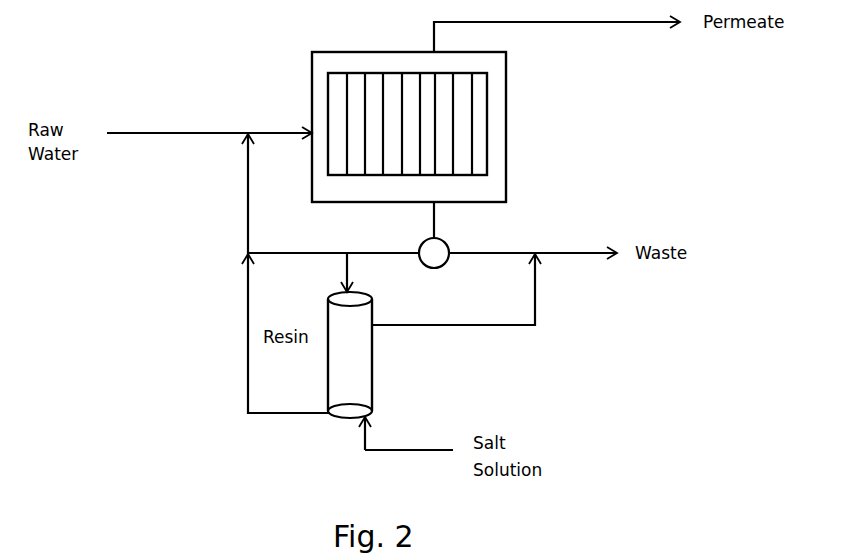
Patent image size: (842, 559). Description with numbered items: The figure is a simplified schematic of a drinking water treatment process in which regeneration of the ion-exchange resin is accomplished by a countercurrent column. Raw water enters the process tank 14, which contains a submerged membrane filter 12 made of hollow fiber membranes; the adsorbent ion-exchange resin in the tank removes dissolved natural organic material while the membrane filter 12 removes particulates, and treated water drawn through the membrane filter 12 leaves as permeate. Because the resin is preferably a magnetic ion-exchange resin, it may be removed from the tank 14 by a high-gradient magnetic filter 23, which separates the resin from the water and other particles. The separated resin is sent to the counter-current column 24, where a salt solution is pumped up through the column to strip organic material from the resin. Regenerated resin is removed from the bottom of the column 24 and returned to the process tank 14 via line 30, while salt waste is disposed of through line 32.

The submerged membrane filter 12 is at (490, 114).
The process tank 14 is at (508, 168).
The high-gradient magnetic filter 23 is at (437, 257).
The counter-current column 24 is at (359, 355).
The line 30 is at (247, 380).
The line 32 is at (535, 294).